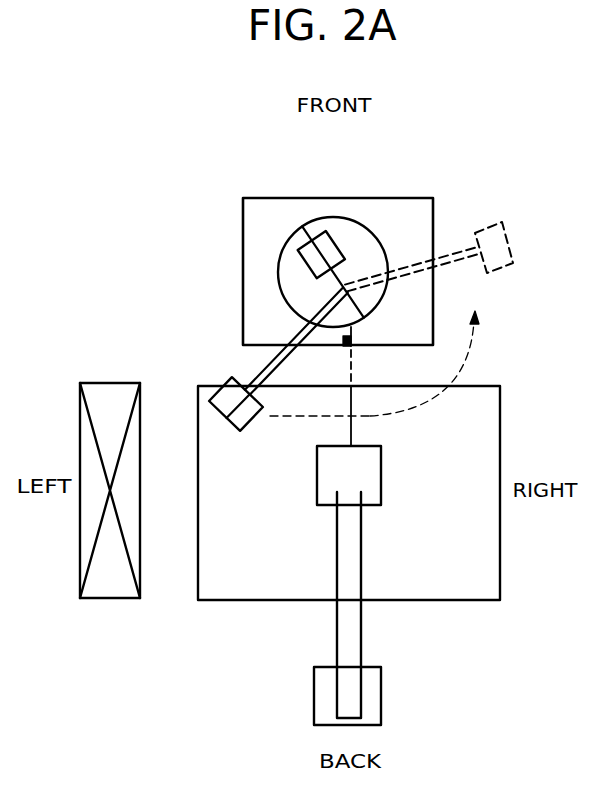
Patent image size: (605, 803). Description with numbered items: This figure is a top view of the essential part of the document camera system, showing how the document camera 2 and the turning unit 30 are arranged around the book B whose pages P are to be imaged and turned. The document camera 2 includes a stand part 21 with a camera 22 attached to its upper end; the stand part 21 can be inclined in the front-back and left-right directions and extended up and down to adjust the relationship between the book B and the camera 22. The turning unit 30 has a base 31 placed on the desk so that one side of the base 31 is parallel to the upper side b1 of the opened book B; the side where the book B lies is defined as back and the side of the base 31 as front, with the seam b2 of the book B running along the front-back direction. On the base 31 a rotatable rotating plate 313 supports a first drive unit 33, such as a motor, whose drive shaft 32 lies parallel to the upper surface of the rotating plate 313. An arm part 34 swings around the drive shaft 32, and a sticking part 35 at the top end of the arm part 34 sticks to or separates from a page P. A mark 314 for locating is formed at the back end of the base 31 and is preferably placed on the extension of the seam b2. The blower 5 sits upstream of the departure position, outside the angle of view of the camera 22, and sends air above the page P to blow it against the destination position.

The document camera 2 is at (383, 717).
The blower 5 is at (80, 567).
The stand part 21 is at (335, 645).
The camera 22 is at (381, 469).
The turning unit 30 is at (480, 191).
The base 31 is at (421, 197).
The drive shaft 32 is at (311, 232).
The first drive unit 33 is at (330, 240).
The arm part 34 is at (250, 374).
The sticking part 35 is at (226, 385).
The rotating plate 313 is at (283, 271).
The mark 314 is at (345, 344).
The upper side b1 is at (478, 386).
The seam b2 is at (353, 408).
The page P is at (200, 577).
The book B is at (246, 599).